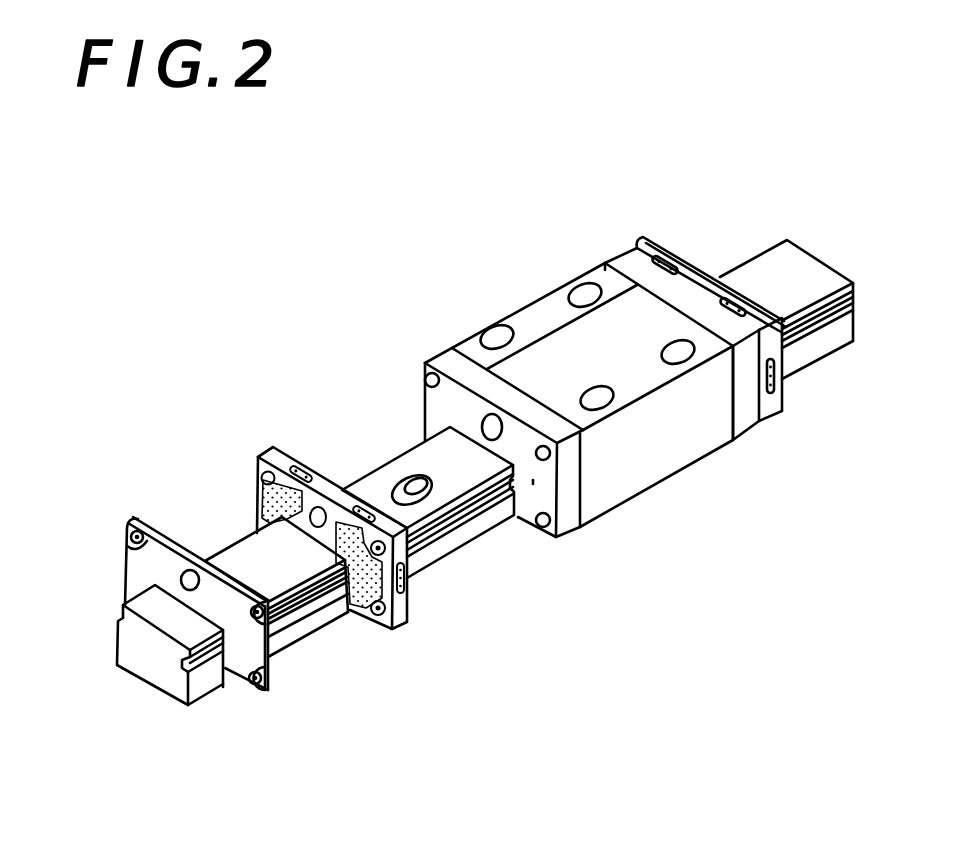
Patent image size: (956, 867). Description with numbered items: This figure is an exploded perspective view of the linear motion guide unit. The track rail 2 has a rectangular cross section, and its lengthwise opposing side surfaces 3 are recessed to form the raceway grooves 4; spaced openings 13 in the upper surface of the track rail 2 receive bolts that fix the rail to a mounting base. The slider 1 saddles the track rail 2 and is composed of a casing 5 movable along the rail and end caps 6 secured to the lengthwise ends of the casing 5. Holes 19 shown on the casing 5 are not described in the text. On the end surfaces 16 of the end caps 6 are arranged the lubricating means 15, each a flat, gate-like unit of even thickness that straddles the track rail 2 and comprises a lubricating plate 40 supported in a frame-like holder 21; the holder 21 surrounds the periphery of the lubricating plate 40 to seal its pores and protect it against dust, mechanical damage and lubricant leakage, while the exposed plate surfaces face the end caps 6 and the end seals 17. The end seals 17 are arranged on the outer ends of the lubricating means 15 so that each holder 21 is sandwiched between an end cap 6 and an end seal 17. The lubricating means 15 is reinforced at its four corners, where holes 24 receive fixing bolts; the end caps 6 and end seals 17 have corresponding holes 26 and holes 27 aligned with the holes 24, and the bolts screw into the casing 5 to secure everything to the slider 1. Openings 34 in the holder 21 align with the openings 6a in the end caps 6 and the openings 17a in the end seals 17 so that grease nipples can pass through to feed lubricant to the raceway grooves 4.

The slider 1 is at (668, 482).
The track rail 2 is at (375, 477).
The lengthwise side surfaces 3 is at (122, 630).
The raceway grooves 4 is at (193, 662).
The casing 5 is at (555, 308).
The end caps 6 is at (620, 260).
The openings in the end caps 6a is at (490, 412).
The openings 13 is at (411, 486).
The lubricating means 15 is at (392, 617).
The end surfaces of the end caps 16 is at (533, 482).
The end seals 17 is at (170, 560).
The openings in the end seals 17a is at (190, 575).
The mounting holes 19 is at (585, 295).
The holder 21 is at (275, 448).
The holes 24 is at (263, 465).
The holes 26 is at (425, 378).
The holes 27 is at (132, 527).
The openings 34 is at (318, 508).
The lubricating plate 40 is at (266, 502).